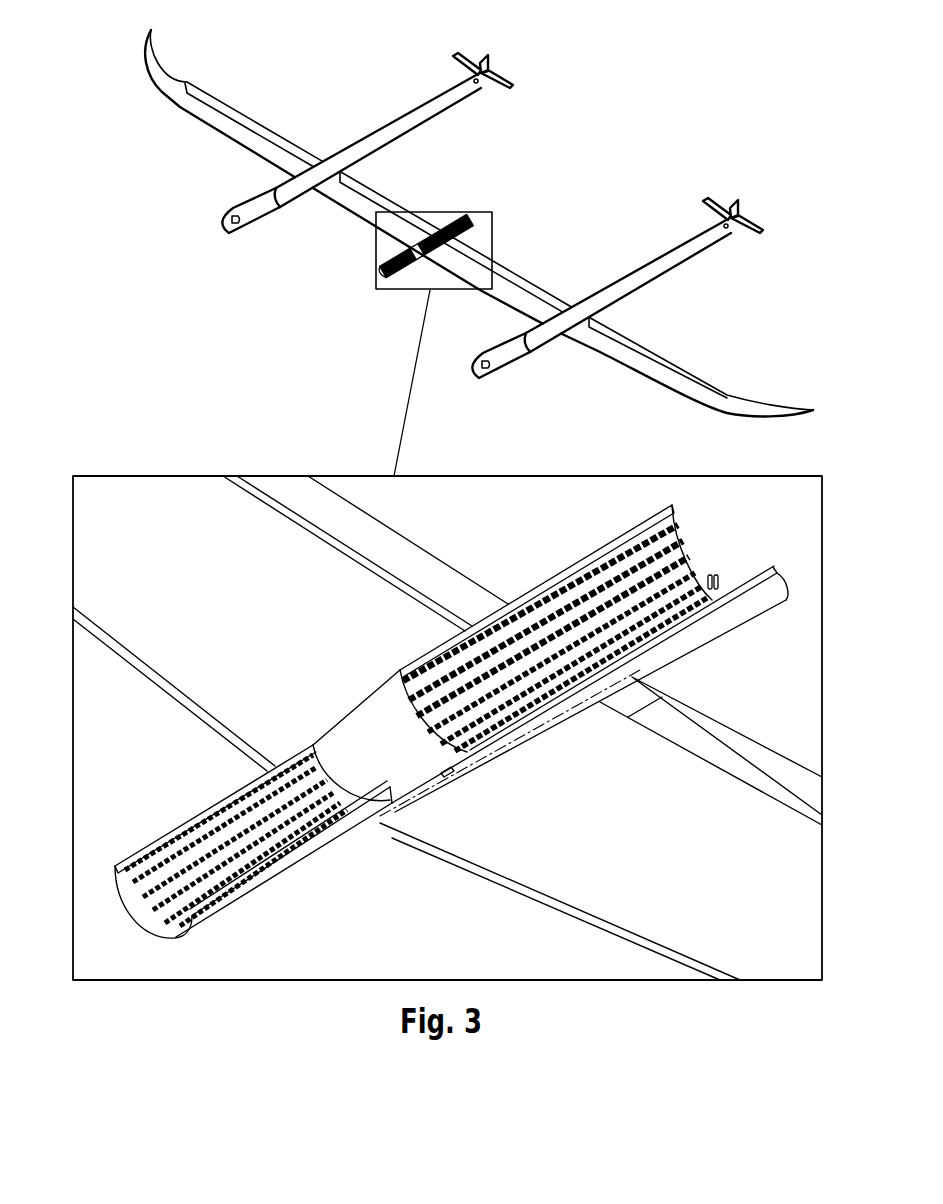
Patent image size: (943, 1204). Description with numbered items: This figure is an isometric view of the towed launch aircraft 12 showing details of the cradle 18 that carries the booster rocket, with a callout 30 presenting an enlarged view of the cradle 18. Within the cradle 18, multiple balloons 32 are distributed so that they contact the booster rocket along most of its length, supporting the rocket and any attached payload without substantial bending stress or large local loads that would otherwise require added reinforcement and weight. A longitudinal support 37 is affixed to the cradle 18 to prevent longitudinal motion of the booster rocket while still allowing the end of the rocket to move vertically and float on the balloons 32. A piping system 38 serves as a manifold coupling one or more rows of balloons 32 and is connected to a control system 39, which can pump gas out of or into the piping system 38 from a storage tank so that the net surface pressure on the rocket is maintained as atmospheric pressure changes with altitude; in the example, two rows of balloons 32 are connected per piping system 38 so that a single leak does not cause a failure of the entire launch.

The towed launch aircraft 12 is at (517, 362).
The cradle 18 is at (774, 578).
The callout 30 is at (472, 212).
The balloons 32 is at (672, 530).
The longitudinal support 37 is at (716, 572).
The piping system 38 is at (681, 640).
The control system 39 is at (455, 775).